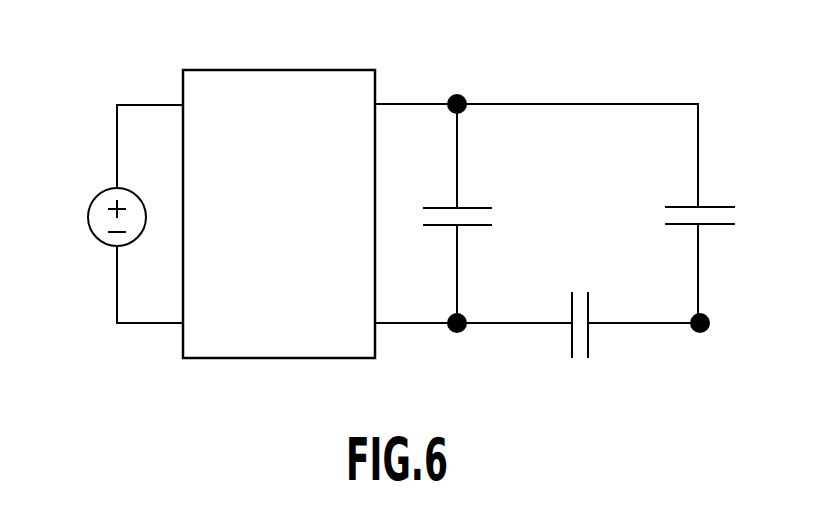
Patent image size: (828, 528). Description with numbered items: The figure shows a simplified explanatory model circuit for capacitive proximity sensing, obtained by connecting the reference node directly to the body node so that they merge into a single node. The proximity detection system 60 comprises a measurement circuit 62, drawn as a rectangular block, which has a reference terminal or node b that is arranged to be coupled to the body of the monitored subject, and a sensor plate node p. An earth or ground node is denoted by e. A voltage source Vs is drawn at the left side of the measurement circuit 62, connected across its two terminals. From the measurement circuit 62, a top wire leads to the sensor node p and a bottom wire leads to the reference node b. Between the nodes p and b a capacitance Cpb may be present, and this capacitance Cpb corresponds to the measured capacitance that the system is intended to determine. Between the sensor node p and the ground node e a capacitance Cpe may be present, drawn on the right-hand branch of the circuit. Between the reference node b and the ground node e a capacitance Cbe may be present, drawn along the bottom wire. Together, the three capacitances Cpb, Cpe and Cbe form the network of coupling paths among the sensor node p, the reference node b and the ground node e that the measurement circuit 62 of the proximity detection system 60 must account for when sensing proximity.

The proximity detection system 60 is at (395, 202).
The measurement circuit 62 is at (236, 84).
The voltage source Vs is at (100, 217).
The capacitance between nodes p and b Cpb is at (477, 217).
The capacitance between nodes p and e Cpe is at (675, 217).
The capacitance between nodes b and e Cbe is at (579, 342).
The sensor node p is at (455, 90).
The reference node b is at (452, 337).
The earth or ground node e is at (703, 336).